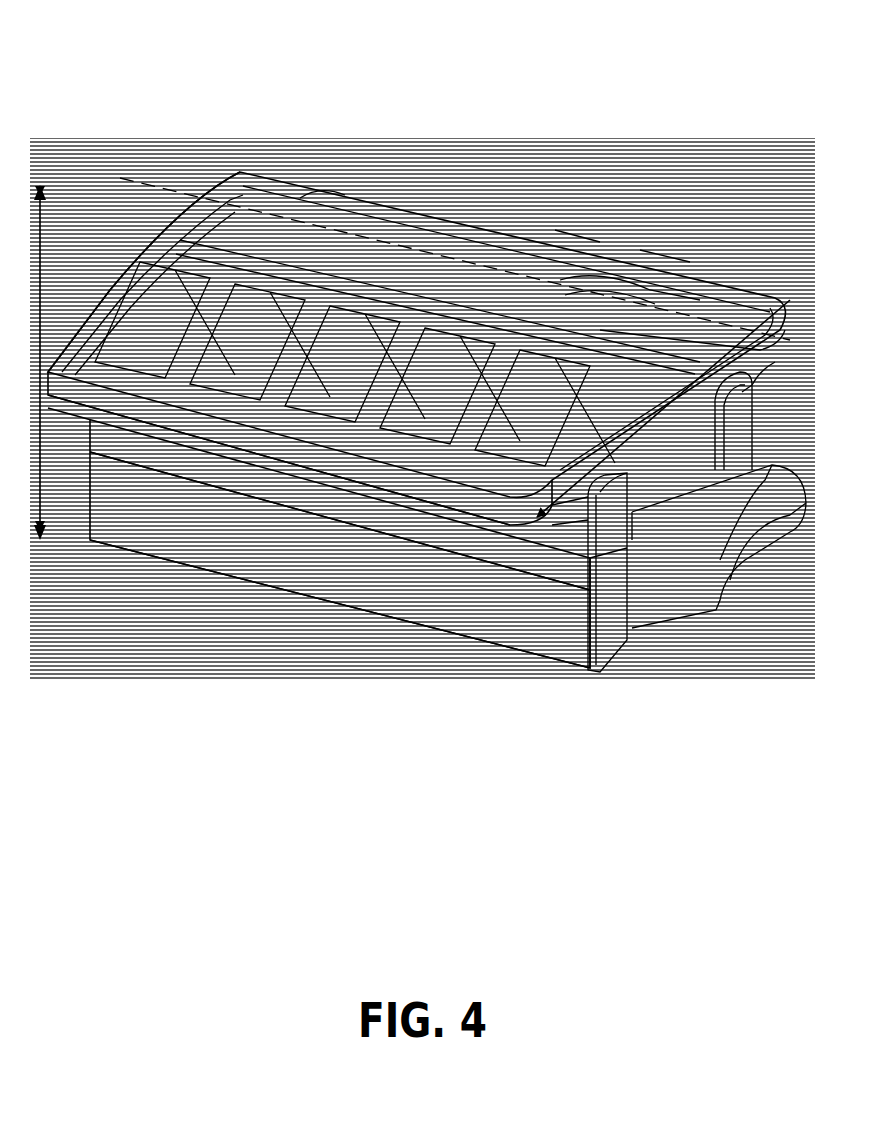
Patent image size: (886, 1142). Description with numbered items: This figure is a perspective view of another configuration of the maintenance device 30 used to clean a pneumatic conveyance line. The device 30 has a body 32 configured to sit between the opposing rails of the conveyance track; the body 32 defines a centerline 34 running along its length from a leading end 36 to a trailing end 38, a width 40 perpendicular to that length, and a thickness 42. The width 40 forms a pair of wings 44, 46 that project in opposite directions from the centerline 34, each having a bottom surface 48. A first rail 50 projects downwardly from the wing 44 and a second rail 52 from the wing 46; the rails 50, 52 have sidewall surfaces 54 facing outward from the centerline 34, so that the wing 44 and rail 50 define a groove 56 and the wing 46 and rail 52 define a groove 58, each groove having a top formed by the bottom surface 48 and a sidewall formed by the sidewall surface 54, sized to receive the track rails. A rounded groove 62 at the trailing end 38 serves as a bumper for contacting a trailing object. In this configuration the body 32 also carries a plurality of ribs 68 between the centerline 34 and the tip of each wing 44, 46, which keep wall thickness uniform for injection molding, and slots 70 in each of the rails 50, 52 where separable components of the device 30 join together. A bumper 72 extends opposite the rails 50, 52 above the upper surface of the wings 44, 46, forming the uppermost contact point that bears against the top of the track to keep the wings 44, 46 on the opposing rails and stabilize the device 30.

The maintenance device 30 is at (593, 100).
The body 32 is at (305, 207).
The centerline 34 is at (130, 180).
The leading end 36 is at (203, 183).
The trailing end 38 is at (700, 300).
The width 40 is at (790, 300).
The thickness 42 is at (50, 240).
The wing 44 is at (210, 400).
The wing 46 is at (443, 210).
The bottom surface 48 is at (258, 462).
The first rail 50 is at (605, 615).
The second rail 52 is at (740, 442).
The sidewall surface 54 is at (527, 600).
The groove 56 is at (568, 522).
The groove 58 is at (763, 373).
The rounded groove 62 is at (750, 530).
The ribs 68 is at (432, 390).
The slots 70 is at (350, 520).
The bumper 72 is at (587, 285).